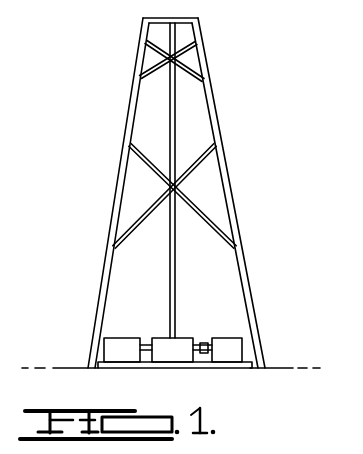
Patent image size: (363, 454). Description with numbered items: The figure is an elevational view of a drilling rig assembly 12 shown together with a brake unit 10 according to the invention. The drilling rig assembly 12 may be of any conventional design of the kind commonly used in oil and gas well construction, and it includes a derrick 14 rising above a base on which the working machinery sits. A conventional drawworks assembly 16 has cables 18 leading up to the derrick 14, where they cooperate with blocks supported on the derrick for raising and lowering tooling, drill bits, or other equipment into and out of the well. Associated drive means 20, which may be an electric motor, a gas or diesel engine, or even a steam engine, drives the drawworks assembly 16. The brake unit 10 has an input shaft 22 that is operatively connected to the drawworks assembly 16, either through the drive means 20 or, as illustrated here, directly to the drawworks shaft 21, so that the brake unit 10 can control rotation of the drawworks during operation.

The brake unit 10 is at (243, 345).
The drilling rig assembly 12 is at (70, 261).
The derrick 14 is at (130, 100).
The drawworks assembly 16 is at (173, 358).
The cables 18 is at (176, 274).
The drive means 20 is at (120, 340).
The drawworks shaft 21 is at (203, 343).
The input shaft 22 is at (212, 333).